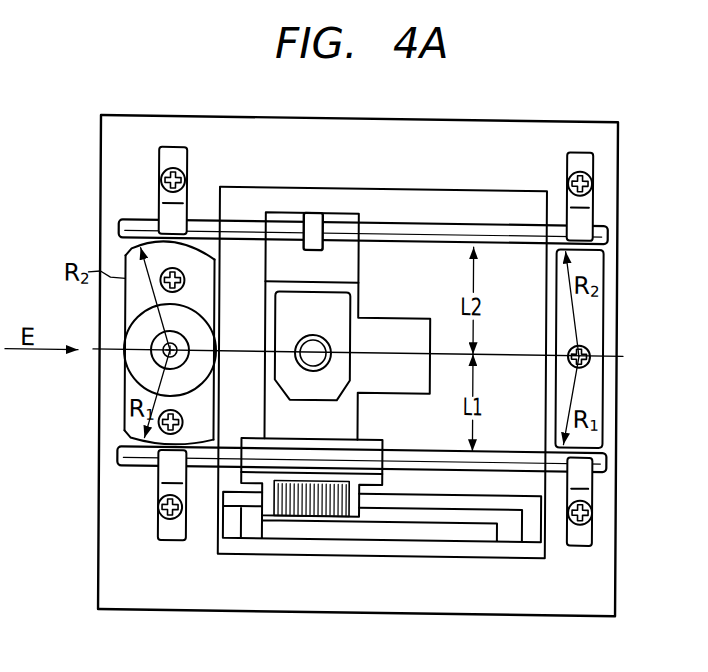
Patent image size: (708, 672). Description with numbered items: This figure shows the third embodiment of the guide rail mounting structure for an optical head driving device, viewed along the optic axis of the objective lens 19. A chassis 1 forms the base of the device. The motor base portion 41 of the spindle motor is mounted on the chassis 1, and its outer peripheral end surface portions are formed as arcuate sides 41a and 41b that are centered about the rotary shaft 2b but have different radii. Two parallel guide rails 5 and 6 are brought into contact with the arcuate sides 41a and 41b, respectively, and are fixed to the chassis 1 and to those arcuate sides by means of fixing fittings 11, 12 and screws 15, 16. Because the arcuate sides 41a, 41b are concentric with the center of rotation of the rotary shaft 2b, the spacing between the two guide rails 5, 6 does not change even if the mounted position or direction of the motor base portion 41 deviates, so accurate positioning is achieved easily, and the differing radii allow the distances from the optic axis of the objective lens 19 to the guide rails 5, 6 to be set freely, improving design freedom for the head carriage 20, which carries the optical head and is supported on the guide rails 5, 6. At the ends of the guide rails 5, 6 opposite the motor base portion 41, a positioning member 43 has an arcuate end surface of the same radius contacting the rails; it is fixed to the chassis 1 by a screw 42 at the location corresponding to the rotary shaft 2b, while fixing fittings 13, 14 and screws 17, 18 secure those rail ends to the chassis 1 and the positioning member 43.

The chassis 1 is at (255, 602).
The rotary shaft 2b is at (163, 362).
The guide rail 5 is at (417, 445).
The guide rail 6 is at (415, 224).
The fixing fitting 11 is at (158, 528).
The fixing fitting 12 is at (170, 150).
The fixing fitting 13 is at (580, 540).
The fixing fitting 14 is at (575, 146).
The screw 15 is at (173, 520).
The screw 16 is at (187, 170).
The screw 17 is at (593, 522).
The screw 18 is at (592, 166).
The objective lens 19 is at (317, 345).
The head carriage 20 is at (323, 420).
The motor base portion 41 is at (133, 297).
The arcuate side 41a is at (123, 436).
The arcuate side 41b is at (125, 247).
The screw 42 is at (588, 342).
The positioning member 43 is at (593, 299).